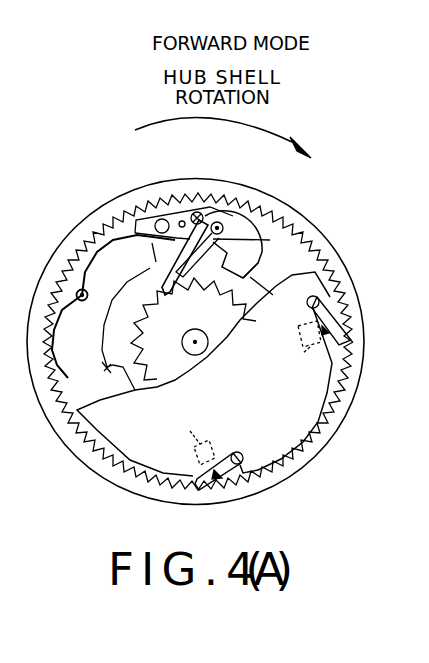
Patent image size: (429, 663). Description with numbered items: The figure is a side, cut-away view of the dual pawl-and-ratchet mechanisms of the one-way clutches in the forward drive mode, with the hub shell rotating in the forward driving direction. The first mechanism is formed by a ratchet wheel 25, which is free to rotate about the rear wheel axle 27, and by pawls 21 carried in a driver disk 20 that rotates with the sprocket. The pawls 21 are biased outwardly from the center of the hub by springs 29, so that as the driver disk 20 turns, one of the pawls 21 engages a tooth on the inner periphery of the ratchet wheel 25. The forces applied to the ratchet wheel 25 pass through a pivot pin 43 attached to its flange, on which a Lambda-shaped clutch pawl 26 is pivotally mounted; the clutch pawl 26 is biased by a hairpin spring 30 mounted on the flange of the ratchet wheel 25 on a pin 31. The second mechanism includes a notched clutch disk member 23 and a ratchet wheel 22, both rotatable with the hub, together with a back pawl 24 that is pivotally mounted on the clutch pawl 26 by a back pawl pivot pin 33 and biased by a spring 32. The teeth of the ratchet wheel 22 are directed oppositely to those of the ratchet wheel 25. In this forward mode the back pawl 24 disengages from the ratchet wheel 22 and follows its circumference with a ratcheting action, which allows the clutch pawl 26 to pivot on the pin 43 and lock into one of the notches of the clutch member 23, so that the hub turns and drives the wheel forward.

The driver disk 20 is at (293, 415).
The pawls 21 is at (335, 332).
The ratchet wheel 22 is at (171, 365).
The clutch disk member 23 is at (107, 368).
The back pawl 24 is at (250, 244).
The ratchet wheel 25 is at (318, 447).
The clutch pawl 26 is at (245, 259).
The rear wheel axle 27 is at (194, 330).
The springs 29 is at (244, 393).
The hairpin spring 30 is at (53, 357).
The pin 31 is at (85, 291).
The spring 32 is at (187, 219).
The back pawl pivot pin 33 is at (220, 222).
The pivot pin 43 is at (160, 222).